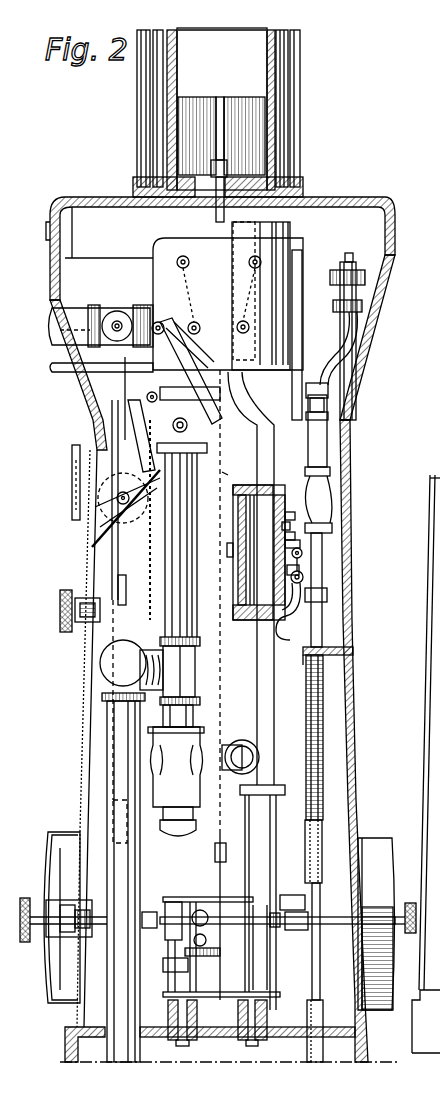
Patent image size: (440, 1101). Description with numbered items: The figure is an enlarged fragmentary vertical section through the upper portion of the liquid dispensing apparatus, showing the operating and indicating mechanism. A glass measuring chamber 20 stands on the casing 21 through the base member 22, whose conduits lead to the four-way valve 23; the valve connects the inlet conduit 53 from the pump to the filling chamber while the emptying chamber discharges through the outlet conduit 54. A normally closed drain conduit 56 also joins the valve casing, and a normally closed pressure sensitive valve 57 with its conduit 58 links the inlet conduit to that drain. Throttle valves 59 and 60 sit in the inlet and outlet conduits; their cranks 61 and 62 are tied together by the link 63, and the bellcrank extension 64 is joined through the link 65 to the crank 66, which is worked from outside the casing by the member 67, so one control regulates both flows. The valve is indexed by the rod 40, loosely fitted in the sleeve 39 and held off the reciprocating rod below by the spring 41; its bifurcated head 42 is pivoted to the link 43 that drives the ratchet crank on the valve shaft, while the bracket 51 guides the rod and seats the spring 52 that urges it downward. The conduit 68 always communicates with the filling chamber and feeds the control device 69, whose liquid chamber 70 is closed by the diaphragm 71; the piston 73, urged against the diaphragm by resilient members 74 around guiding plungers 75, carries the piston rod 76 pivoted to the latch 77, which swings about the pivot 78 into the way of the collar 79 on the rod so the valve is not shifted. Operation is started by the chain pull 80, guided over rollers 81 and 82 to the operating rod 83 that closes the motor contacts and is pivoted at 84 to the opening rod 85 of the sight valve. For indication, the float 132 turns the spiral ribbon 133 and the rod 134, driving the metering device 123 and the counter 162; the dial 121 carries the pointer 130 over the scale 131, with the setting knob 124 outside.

The measuring chamber 20 is at (277, 84).
The casing 21 is at (87, 743).
The base member 22 is at (385, 259).
The four-way valve 23 is at (283, 244).
The sleeve 39 is at (310, 1045).
The rod 40 is at (320, 700).
The spring 41 is at (320, 817).
The bifurcated head 42 is at (326, 393).
The link 43 is at (330, 353).
The bracket 51 is at (333, 647).
The spring 52 is at (327, 663).
The inlet conduit 53 is at (110, 833).
The outlet conduit 54 is at (60, 312).
The drain conduit 56 is at (252, 410).
The pressure sensitive valve 57 is at (163, 810).
The conduit 58 is at (227, 750).
The throttle valve 59 is at (133, 432).
The throttle valve 60 is at (118, 324).
The operating crank 61 is at (148, 407).
The operating crank 62 is at (147, 318).
The link 63 is at (178, 368).
The extension crank 64 is at (157, 420).
The link 65 is at (143, 452).
The crank 66 is at (123, 580).
The control member 67 is at (62, 603).
The conduit 68 is at (222, 472).
The control device 69 is at (283, 515).
The liquid chamber 70 is at (256, 563).
The diaphragm 71 is at (285, 537).
The piston 73 is at (287, 545).
The resilient member 74 is at (300, 573).
The guiding plunger 75 is at (282, 527).
The piston rod 76 is at (292, 553).
The latch 77 is at (297, 608).
The pivot 78 is at (305, 582).
The collar 79 is at (323, 593).
The chain pull 80 is at (73, 507).
The roller 81 is at (133, 512).
The roller 82 is at (102, 657).
The operating rod 83 is at (113, 725).
The pivot 84 is at (135, 372).
The opening rod 85 is at (60, 363).
The dial 121 is at (50, 1010).
The metering device 123 is at (211, 971).
The setting knob 124 is at (23, 898).
The pointer 130 is at (65, 880).
The scale 131 is at (65, 977).
The float 132 is at (213, 30).
The spiral ribbon 133 is at (205, 116).
The rod 134 is at (222, 828).
The counter 162 is at (295, 895).